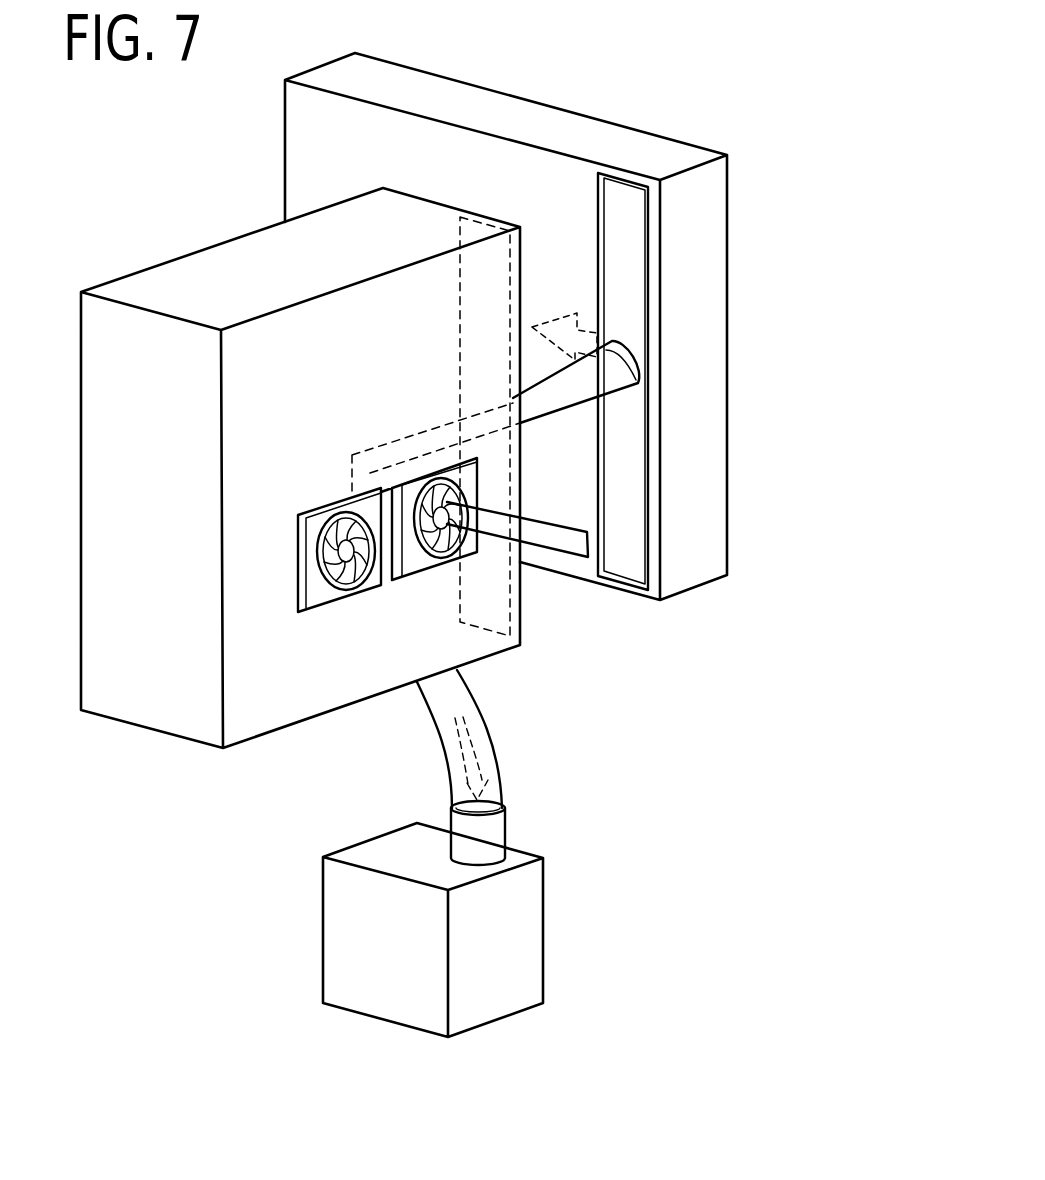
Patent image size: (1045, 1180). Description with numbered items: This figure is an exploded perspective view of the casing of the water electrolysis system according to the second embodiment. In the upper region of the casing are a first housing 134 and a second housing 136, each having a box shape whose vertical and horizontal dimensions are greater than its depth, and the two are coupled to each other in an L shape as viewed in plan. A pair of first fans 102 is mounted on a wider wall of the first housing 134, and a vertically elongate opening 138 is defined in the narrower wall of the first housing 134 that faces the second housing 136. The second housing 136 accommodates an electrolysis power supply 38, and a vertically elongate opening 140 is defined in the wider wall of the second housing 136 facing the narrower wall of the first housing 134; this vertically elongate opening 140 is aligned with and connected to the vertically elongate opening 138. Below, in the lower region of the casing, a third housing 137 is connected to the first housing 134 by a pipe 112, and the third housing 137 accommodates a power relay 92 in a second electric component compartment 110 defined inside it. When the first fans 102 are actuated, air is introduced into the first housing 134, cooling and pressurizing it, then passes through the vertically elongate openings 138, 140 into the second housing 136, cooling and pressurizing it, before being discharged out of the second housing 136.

The electrolysis power supply 38 is at (457, 108).
The first fans 102 is at (360, 588).
The second electric component compartment 110 is at (509, 930).
The power relay 92 is at (505, 980).
The pipe 112 is at (458, 697).
The first housing 134 is at (233, 240).
The second housing 136 is at (530, 117).
The third housing 137 is at (509, 919).
The vertically elongate opening 138 is at (483, 345).
The vertically elongate opening 140 is at (627, 295).